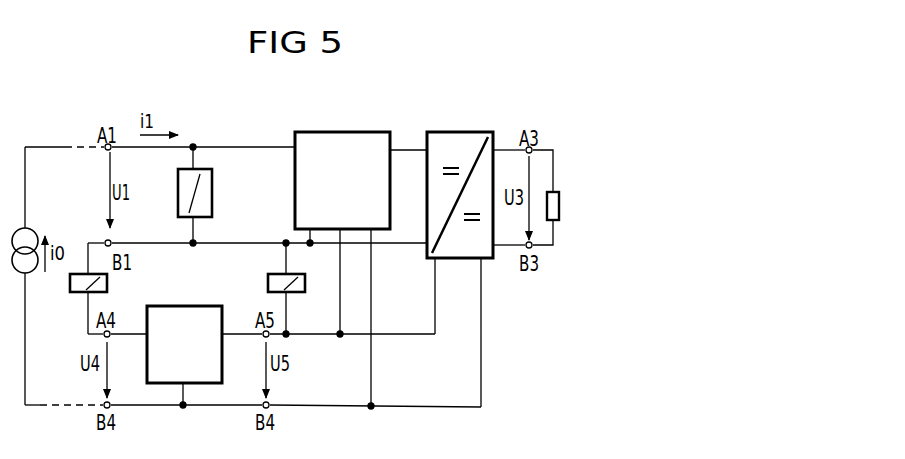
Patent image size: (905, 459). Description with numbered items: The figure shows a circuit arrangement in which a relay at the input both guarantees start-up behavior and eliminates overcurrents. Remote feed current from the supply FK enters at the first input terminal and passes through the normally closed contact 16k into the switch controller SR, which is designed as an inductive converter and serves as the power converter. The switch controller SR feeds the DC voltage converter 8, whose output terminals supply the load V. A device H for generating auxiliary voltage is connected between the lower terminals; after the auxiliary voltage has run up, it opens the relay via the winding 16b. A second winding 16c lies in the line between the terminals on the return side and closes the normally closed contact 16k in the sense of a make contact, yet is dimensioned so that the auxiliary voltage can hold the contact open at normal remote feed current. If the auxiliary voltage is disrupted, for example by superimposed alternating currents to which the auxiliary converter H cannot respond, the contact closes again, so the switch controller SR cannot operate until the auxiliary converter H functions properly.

The normally closed contact 16k is at (212, 195).
The second winding 16c is at (106, 288).
The winding 16b is at (268, 288).
The voltage converter 8 is at (450, 133).
The switch controller SR is at (293, 99).
The device for generating auxiliary voltage H is at (140, 445).
The AC supply source FK is at (40, 147).
The load resistor V is at (560, 207).